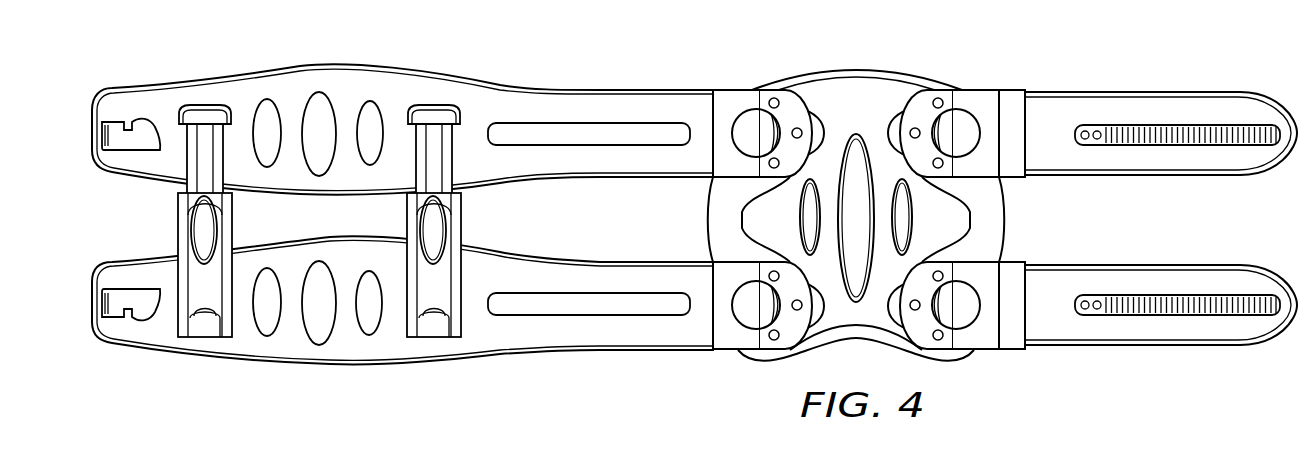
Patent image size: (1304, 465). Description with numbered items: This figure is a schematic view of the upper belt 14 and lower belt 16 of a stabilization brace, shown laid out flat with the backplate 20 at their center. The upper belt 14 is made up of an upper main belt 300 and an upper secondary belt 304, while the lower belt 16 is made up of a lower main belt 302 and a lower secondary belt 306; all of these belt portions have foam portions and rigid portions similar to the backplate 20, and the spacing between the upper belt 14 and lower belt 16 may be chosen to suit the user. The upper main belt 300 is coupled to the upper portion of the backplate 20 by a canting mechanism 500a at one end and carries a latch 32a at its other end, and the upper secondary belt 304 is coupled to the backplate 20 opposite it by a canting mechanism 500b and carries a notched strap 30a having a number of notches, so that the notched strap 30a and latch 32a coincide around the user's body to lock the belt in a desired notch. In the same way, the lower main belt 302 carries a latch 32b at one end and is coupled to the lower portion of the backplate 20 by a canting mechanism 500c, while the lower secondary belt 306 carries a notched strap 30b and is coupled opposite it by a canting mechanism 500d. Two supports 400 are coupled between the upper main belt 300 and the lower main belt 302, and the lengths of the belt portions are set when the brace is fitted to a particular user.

The upper belt 14 is at (597, 72).
The lower belt 16 is at (597, 362).
The backplate 20 is at (877, 92).
The notched strap 30a is at (1153, 122).
The notched strap 30b is at (1155, 318).
The latch 32a is at (143, 133).
The latch 32b is at (143, 305).
The upper main belt 300 is at (505, 98).
The lower main belt 302 is at (502, 336).
The upper secondary belt 304 is at (1057, 107).
The lower secondary belt 306 is at (1060, 330).
The support 400 is at (178, 225).
The canting mechanism 500a is at (730, 101).
The canting mechanism 500b is at (983, 96).
The canting mechanism 500c is at (732, 337).
The canting mechanism 500d is at (980, 340).